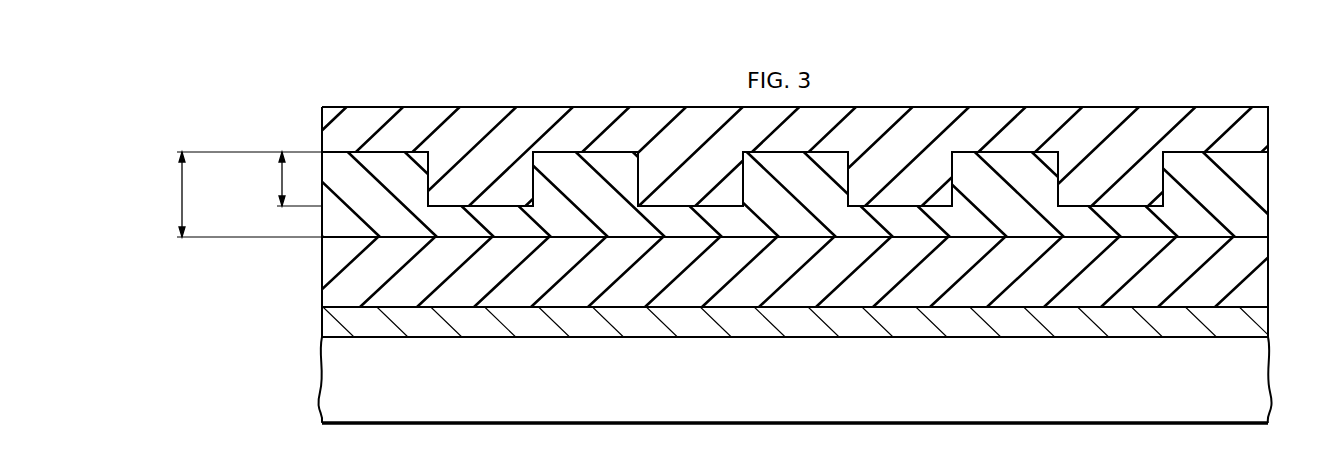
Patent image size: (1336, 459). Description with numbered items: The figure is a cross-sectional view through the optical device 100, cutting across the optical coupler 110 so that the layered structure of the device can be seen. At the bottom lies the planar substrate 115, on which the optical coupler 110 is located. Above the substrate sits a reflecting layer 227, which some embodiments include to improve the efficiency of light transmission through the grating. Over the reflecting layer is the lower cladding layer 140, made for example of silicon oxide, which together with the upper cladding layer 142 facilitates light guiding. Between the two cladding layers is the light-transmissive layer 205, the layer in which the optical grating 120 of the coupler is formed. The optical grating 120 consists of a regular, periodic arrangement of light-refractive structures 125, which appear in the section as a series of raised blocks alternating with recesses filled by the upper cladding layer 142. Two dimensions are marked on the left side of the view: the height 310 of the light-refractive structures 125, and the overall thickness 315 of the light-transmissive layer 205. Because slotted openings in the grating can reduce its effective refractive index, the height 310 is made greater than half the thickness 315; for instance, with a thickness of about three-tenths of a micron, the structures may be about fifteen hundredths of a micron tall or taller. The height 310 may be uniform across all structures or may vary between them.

The optical device 100 is at (260, 295).
The optical coupler 110 is at (1250, 90).
The planar substrate 115 is at (1272, 372).
The optical grating 120 is at (1038, 127).
The light-refractive structures 125 is at (567, 152).
The lower cladding layer 140 is at (1262, 280).
The upper cladding layer 142 is at (428, 107).
The light-transmissive layer 205 is at (1277, 155).
The reflecting layer 227 is at (330, 322).
The height 310 is at (282, 178).
The thickness 315 is at (183, 193).